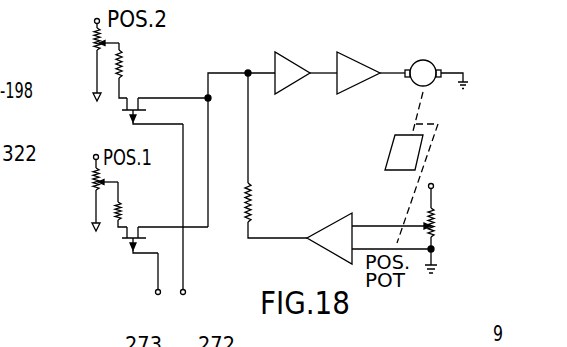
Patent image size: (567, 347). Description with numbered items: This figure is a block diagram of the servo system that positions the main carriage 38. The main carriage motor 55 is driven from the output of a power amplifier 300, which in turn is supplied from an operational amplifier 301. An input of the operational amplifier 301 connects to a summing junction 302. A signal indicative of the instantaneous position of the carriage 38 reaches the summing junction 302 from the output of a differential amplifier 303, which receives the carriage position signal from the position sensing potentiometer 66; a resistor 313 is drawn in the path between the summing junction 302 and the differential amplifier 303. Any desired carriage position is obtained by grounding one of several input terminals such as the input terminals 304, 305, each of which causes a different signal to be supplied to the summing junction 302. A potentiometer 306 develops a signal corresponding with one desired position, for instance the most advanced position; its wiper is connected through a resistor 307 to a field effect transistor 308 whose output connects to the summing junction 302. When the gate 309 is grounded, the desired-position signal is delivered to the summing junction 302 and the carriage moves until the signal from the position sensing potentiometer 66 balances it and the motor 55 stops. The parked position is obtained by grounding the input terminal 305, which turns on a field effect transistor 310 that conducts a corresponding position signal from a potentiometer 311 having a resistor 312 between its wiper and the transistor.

The potentiometer 311 is at (97, 42).
The resistor 312 is at (121, 66).
The field effect transistor 310 is at (141, 90).
The summing junction 302 is at (248, 70).
The feedback resistor 313 is at (251, 210).
The operational amplifier 301 is at (295, 63).
The power amplifier 300 is at (361, 63).
The main carriage motor 55 is at (425, 61).
The main carriage 38 is at (387, 152).
The differential amplifier 303 is at (328, 226).
The position sensing potentiometer 66 is at (436, 221).
The potentiometer 306 is at (93, 183).
The resistor 307 is at (120, 208).
The field effect transistor 308 is at (138, 228).
The gate 309 is at (138, 257).
The input terminal 304 is at (155, 294).
The input terminal 305 is at (186, 292).